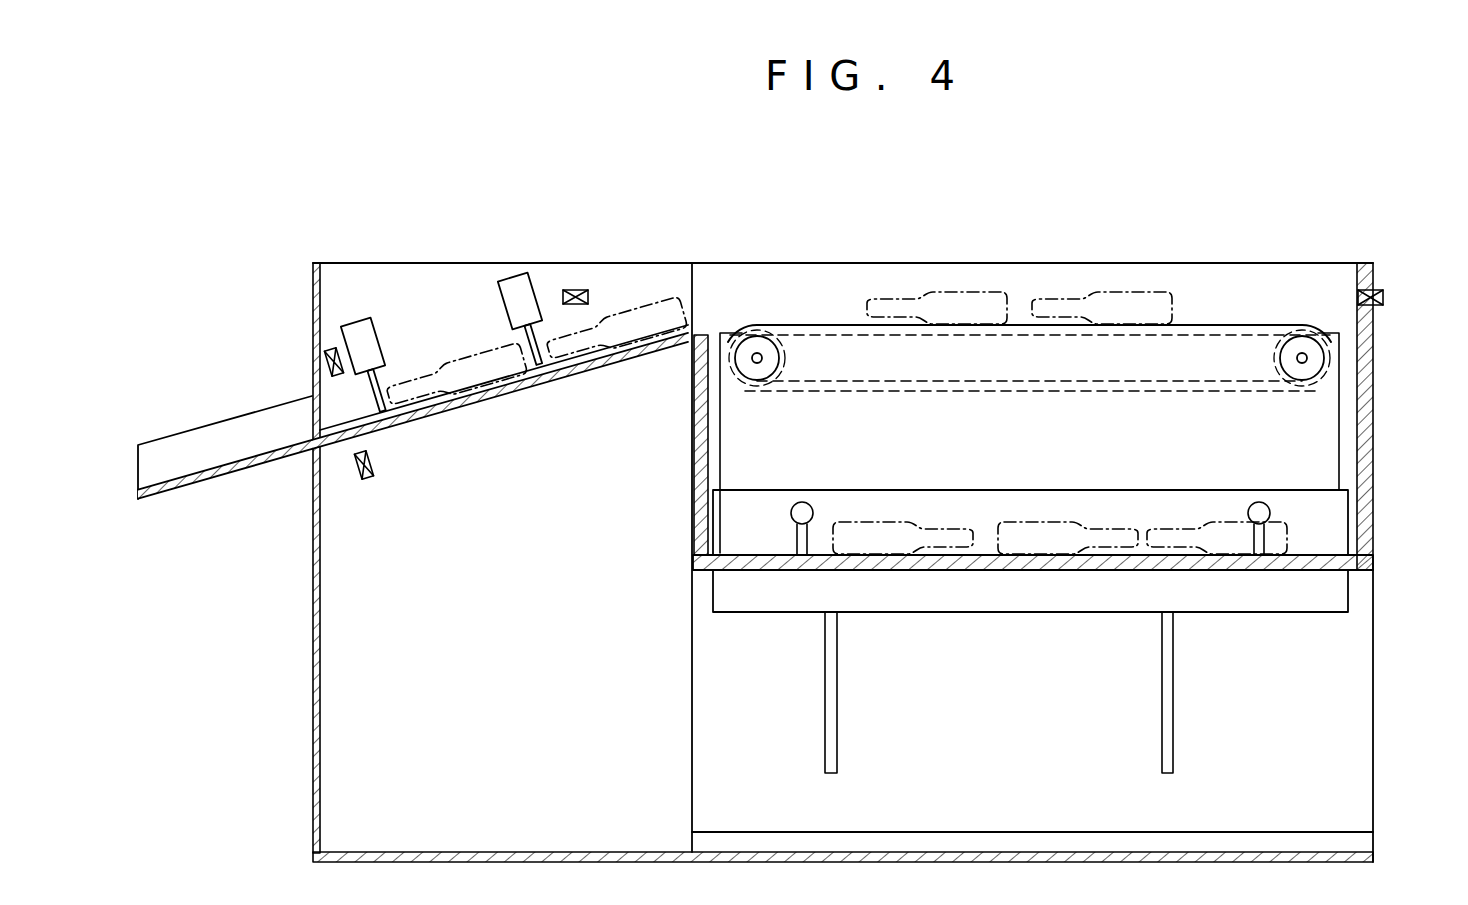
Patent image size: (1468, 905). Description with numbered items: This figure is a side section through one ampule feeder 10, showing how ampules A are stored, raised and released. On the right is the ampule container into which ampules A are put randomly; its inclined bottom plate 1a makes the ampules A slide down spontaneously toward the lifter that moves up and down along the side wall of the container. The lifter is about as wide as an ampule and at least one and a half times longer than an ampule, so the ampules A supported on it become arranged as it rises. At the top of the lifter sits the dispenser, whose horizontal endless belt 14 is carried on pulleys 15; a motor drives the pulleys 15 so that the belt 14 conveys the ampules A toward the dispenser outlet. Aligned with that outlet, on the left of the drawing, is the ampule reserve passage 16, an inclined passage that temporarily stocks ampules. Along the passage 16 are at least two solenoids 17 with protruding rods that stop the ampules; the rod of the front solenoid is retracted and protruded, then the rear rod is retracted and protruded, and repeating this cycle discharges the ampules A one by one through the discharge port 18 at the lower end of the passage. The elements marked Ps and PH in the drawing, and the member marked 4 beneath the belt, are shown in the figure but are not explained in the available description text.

The ampule feeder 10 is at (1163, 235).
The discharge port 18 is at (228, 438).
The ampule reserve passage 16 is at (475, 407).
The solenoids 17 is at (515, 288).
The photo sensor Ps is at (328, 350).
The photo sensor PH is at (580, 290).
The horizontal endless belt 14 is at (1212, 325).
The pulleys 15 is at (767, 375).
The platform 4 is at (975, 490).
The inclined bottom plate 1a is at (988, 555).
The ampules A is at (982, 303).